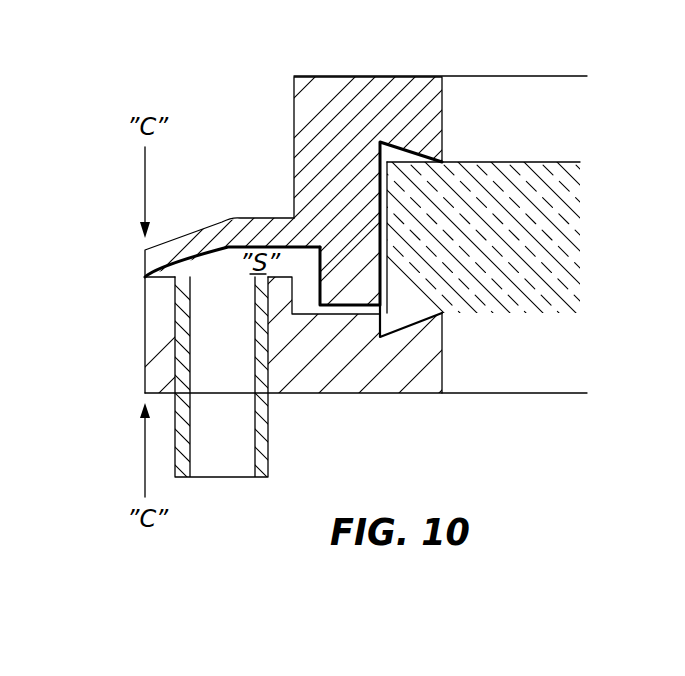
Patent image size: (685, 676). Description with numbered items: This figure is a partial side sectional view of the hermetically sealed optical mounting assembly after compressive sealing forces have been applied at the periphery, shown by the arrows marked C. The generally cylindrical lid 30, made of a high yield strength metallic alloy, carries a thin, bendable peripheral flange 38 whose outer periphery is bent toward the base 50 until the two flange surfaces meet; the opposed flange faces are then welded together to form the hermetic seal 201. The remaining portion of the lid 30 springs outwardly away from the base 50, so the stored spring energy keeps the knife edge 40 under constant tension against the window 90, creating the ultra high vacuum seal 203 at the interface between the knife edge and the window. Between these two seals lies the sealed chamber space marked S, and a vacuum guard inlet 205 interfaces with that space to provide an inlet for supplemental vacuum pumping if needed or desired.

The lid 30 is at (358, 93).
The peripheral flange 38 is at (232, 227).
The knife edge 40 is at (443, 152).
The base 50 is at (414, 396).
The window 90 is at (542, 173).
The hermetic seal 201 is at (143, 277).
The ultra high vacuum seal 203 is at (443, 162).
The vacuum guard inlet 205 is at (263, 443).